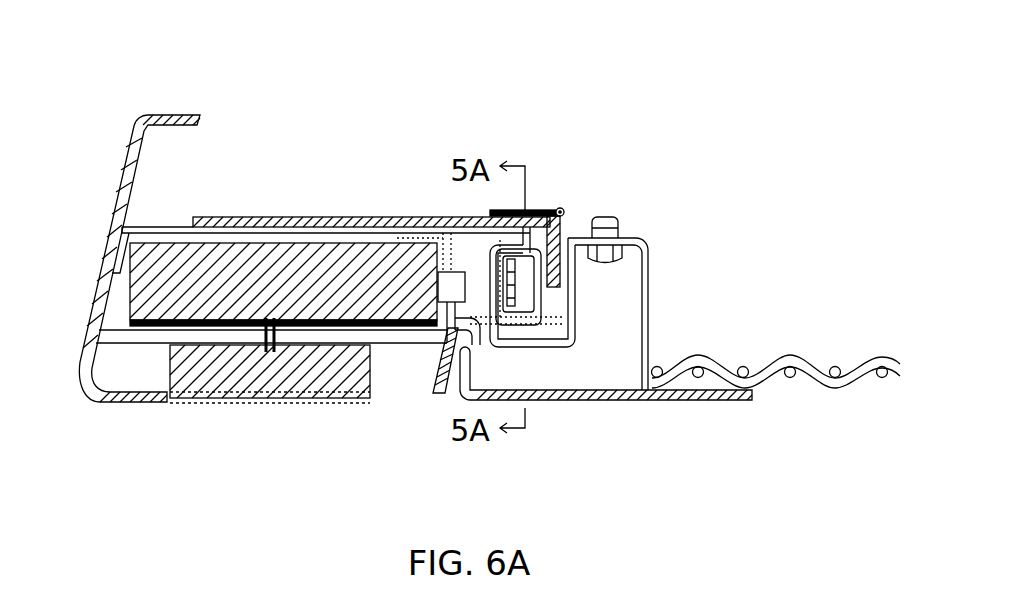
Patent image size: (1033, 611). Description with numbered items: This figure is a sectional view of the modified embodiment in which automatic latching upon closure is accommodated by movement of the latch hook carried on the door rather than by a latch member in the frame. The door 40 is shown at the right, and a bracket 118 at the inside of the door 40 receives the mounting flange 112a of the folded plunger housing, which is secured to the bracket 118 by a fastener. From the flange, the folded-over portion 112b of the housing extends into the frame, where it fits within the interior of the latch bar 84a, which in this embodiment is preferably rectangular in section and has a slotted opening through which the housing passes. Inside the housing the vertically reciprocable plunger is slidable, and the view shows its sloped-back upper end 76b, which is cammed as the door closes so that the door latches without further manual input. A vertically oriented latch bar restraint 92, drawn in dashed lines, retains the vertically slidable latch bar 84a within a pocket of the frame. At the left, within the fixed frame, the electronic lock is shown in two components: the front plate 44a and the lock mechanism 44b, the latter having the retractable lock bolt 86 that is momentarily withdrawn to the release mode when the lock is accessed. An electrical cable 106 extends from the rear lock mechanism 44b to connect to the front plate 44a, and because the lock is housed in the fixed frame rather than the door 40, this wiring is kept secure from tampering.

The door 40 is at (630, 418).
The front plate 44a is at (222, 400).
The lock mechanism 44b is at (167, 300).
The sloped-back upper end 76b is at (508, 305).
The latch bar 84a is at (453, 220).
The lock bolt 86 is at (452, 292).
The latch bar restraint 92 is at (398, 213).
The electrical cable 106 is at (268, 350).
The mounting flange 112a is at (597, 213).
The folded-over portion 112b is at (525, 236).
The bracket 118 is at (641, 237).